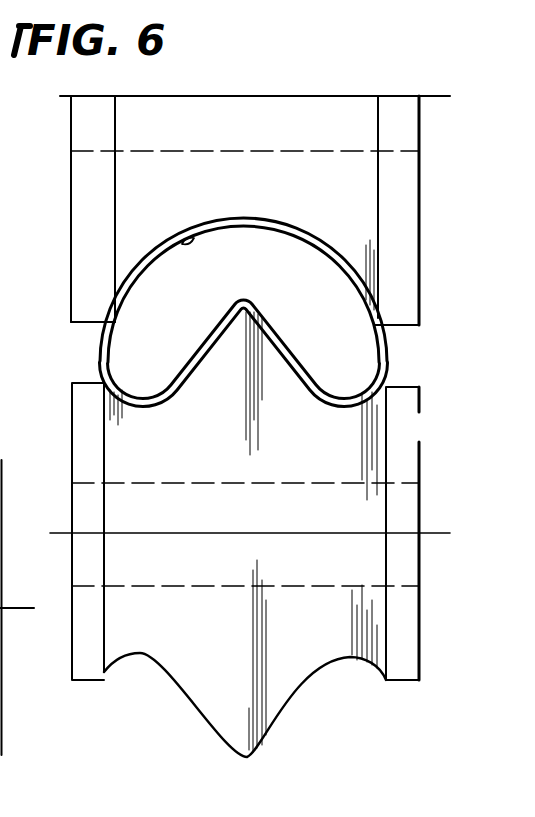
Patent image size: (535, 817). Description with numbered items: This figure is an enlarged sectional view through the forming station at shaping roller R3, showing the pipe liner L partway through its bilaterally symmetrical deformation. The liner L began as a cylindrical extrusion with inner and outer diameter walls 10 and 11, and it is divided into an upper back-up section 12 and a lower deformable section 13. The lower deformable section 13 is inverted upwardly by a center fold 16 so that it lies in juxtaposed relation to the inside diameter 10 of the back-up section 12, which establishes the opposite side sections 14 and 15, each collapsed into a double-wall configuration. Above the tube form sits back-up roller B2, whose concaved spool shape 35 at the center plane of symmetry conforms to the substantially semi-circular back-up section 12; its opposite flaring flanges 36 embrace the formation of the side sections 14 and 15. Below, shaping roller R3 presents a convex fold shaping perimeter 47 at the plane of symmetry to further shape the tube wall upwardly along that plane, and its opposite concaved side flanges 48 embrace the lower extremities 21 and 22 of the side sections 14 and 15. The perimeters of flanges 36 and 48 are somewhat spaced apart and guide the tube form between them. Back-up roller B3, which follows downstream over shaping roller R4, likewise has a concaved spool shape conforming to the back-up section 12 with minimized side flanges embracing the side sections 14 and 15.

The back-up roller B2 is at (70, 150).
The back-up roller B3 is at (137, 660).
The upper back-up section 12 is at (263, 212).
The pipe liner L is at (340, 244).
The concaved spool shape 35 is at (186, 240).
The side section 14 is at (148, 263).
The side section 15 is at (385, 272).
The convex fold shaping perimeter 47 is at (265, 300).
The flaring flanges 36 is at (124, 308).
The center fold 16 is at (232, 312).
The inner diameter wall 10 is at (372, 320).
The concaved side flanges 48 is at (111, 386).
The outer diameter wall 11 is at (390, 363).
The lower extremity 21 is at (142, 418).
The lower deformable section 13 is at (298, 380).
The lower extremity 22 is at (372, 400).